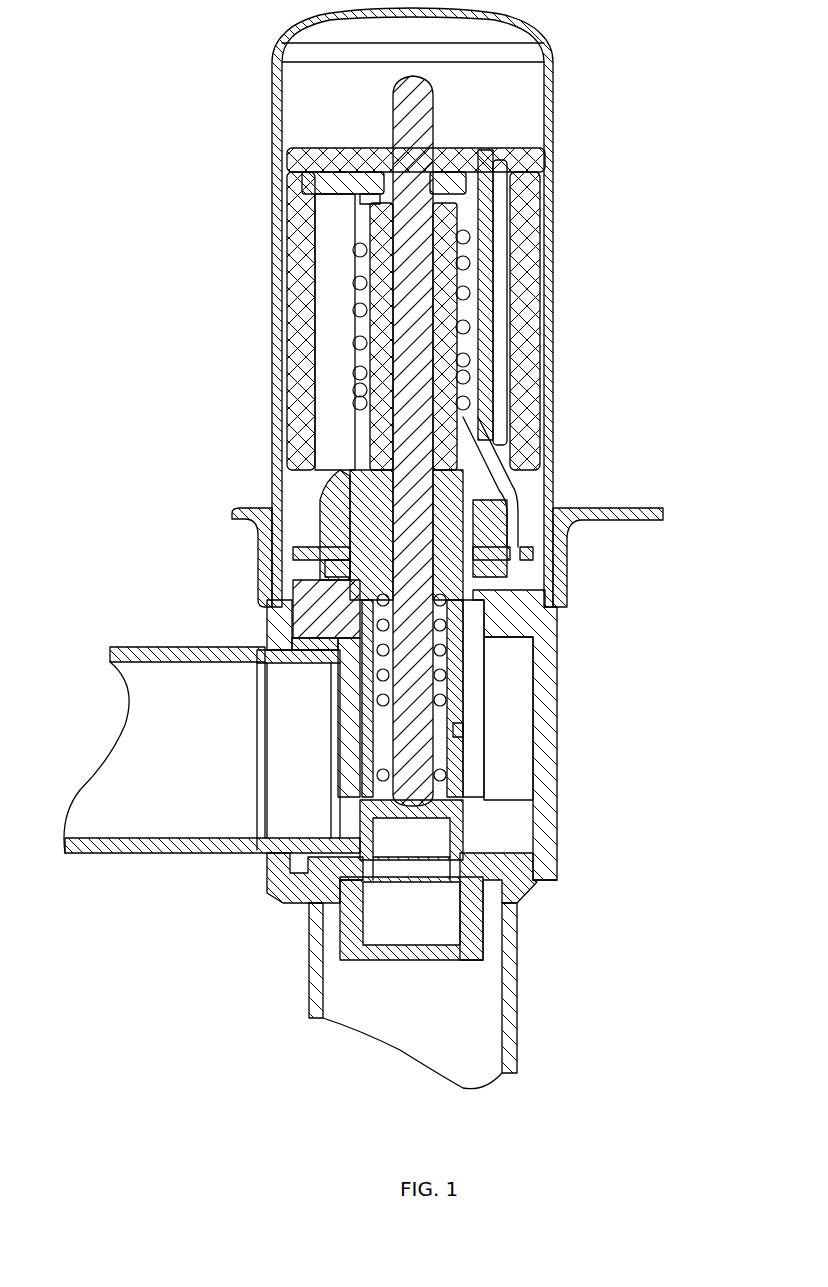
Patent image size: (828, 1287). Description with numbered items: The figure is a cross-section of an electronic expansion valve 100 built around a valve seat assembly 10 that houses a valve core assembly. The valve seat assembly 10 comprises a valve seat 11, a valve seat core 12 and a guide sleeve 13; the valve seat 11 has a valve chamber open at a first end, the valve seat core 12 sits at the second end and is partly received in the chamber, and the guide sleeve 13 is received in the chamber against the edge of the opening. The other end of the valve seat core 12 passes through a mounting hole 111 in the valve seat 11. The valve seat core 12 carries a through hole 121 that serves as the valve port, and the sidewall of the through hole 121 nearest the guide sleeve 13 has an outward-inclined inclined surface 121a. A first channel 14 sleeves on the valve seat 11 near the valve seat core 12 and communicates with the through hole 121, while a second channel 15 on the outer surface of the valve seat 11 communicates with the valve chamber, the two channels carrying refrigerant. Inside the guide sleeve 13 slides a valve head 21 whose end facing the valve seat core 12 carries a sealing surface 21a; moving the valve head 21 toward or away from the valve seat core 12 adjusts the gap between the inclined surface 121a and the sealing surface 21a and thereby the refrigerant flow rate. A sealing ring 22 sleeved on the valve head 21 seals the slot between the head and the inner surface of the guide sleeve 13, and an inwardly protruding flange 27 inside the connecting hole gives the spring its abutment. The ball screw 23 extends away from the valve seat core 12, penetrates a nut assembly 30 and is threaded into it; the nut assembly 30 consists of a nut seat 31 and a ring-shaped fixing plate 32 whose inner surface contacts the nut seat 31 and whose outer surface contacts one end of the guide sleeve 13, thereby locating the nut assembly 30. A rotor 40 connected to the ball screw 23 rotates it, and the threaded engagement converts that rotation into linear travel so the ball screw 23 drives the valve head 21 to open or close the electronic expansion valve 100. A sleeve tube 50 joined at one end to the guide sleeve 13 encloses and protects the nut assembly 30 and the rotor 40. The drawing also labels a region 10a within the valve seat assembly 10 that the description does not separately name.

The electronic expansion valve 100 is at (247, 110).
The sleeve tube 50 is at (556, 60).
The ball screw 23 is at (413, 128).
The rotor 40 is at (297, 263).
The nut assembly 30 is at (96, 372).
The nut seat 31 is at (362, 383).
The fixing plate 32 is at (320, 545).
The guide sleeve 13 is at (322, 610).
The accommodating cavity 10a is at (510, 653).
The valve head 21 is at (460, 653).
The sealing ring 22 is at (468, 728).
The flange 27 is at (442, 756).
The valve seat 11 is at (552, 787).
The valve seat assembly 10 is at (558, 862).
The sealing surface 21a is at (558, 884).
The valve seat core 12 is at (503, 922).
The first channel 14 is at (503, 1030).
The second channel 15 is at (160, 848).
The inclined surface 121a is at (320, 902).
The mounting hole 111 is at (345, 920).
The through hole 121 is at (377, 938).